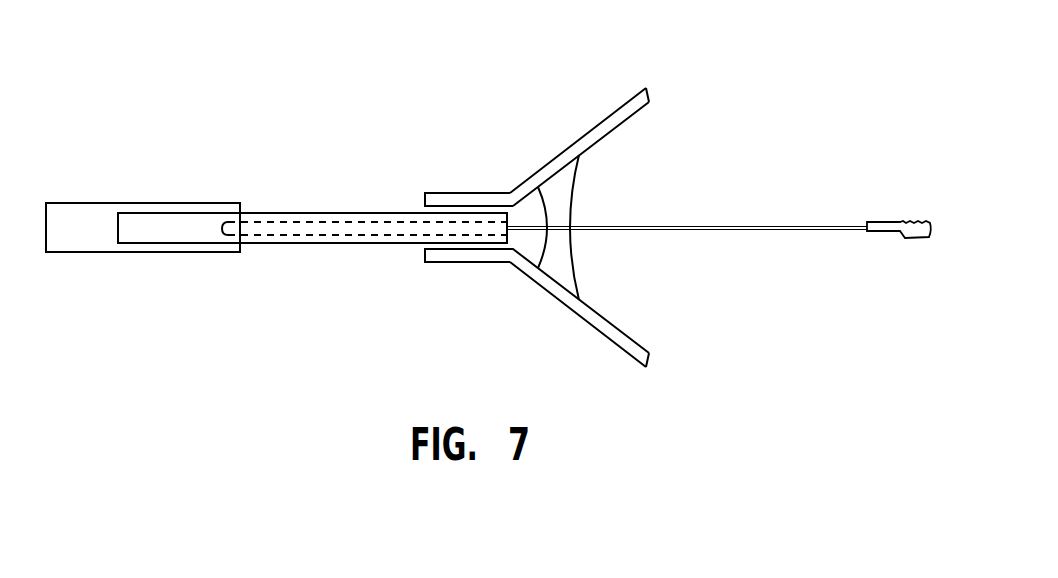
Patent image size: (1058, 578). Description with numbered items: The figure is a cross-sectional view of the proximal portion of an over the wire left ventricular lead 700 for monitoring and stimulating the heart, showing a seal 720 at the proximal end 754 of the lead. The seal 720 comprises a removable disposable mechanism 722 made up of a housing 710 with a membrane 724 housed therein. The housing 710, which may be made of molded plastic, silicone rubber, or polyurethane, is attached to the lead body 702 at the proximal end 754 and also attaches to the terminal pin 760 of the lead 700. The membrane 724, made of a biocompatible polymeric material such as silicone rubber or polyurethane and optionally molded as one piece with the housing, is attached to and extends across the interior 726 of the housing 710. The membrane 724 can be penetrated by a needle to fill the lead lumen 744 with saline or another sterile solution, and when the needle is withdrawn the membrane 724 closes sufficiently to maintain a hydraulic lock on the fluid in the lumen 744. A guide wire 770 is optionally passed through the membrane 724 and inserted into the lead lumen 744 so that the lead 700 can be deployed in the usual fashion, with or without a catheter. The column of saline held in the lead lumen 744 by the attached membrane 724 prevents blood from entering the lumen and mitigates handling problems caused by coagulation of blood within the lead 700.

The lead 700 is at (292, 88).
The lead body 702 is at (72, 253).
The housing 710 is at (578, 138).
The seal 720 is at (527, 292).
The removable disposable mechanism 722 is at (580, 314).
The membrane 724 is at (577, 195).
The interior 726 is at (633, 115).
The lead lumen 744 is at (362, 233).
The proximal end 754 is at (463, 173).
The terminal pin 760 is at (295, 245).
The guide wire 770 is at (918, 238).